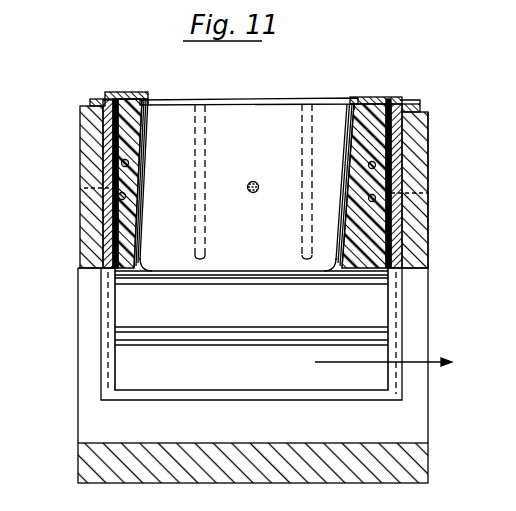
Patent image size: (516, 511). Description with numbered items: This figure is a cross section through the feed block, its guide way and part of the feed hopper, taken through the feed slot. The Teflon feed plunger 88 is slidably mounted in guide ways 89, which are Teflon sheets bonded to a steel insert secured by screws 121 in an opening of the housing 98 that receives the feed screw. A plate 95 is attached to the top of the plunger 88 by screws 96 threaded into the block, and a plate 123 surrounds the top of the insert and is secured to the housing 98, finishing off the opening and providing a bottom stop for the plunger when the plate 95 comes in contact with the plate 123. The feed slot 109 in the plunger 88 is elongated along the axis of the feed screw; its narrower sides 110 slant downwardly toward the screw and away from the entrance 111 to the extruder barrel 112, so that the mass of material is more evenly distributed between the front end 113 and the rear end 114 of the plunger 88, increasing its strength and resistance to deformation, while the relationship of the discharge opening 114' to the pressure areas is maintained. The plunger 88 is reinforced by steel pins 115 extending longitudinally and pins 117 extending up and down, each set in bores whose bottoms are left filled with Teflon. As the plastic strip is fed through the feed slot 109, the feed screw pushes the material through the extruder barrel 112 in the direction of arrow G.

The feed plunger 88 is at (360, 168).
The guide ways 89 is at (113, 143).
The plate 95 is at (408, 100).
The screws 96 is at (123, 92).
The housing 98 is at (92, 258).
The feed slot 109 is at (178, 118).
The narrower sides 110 is at (136, 208).
The entrance 111 is at (402, 272).
The extruder barrel 112 is at (347, 428).
The front end 113 is at (351, 101).
The rear end 114 is at (142, 78).
The discharge opening 114' is at (251, 293).
The steel pins 115 is at (112, 211).
The steel pins 117 is at (328, 92).
The screws 121 is at (100, 190).
The plate 123 is at (93, 103).
The arrow G is at (372, 362).